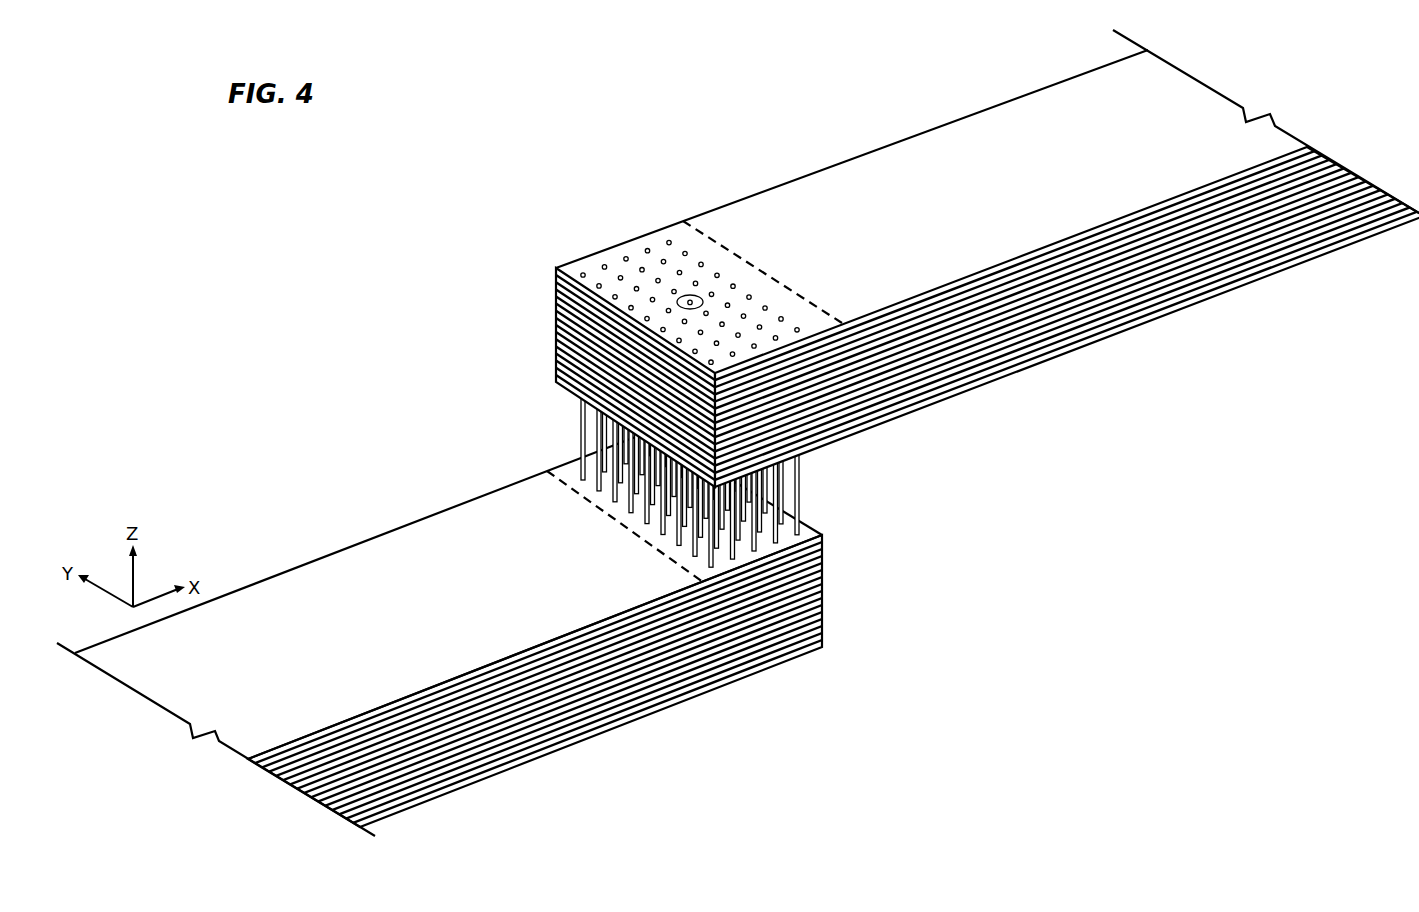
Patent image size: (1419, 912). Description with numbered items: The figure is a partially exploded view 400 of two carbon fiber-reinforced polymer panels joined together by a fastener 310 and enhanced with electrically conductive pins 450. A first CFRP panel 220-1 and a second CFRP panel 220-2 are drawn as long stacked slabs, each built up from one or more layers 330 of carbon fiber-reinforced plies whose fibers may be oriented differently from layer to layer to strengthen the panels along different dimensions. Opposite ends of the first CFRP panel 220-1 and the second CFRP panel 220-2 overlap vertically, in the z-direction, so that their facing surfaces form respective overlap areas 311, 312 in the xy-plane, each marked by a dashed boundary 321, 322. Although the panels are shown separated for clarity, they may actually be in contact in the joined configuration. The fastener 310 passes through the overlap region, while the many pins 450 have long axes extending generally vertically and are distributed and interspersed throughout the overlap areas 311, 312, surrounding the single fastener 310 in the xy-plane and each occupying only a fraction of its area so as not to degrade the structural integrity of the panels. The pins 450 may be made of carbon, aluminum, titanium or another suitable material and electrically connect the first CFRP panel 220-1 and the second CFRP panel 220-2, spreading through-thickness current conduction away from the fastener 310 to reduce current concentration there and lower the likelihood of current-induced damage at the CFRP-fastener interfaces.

The partially exploded view 400 is at (336, 196).
The first CFRP panel 220-1 is at (822, 169).
The second CFRP panel 220-2 is at (361, 544).
The fastener 310 is at (691, 297).
The boundary 321 is at (754, 263).
The overlap area 311 is at (776, 294).
The electrically conductive pins 450 is at (605, 264).
The layers 330 is at (556, 305).
The boundary 322 is at (566, 485).
The overlap area 312 is at (657, 534).